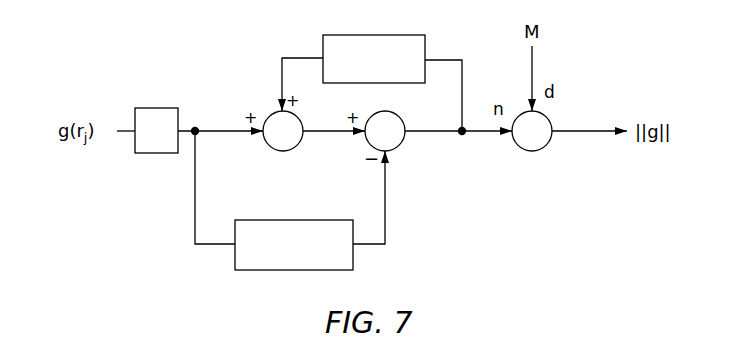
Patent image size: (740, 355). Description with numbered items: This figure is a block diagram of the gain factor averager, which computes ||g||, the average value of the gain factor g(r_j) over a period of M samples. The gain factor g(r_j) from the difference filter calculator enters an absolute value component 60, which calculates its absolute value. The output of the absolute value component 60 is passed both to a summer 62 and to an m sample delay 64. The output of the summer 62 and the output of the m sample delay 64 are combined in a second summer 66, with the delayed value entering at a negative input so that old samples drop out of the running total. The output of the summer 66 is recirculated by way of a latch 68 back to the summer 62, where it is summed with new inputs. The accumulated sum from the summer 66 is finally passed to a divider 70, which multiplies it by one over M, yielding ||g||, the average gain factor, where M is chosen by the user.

The absolute value component 60 is at (160, 108).
The summer 62 is at (297, 146).
The m sample delay 64 is at (353, 262).
The summer 66 is at (398, 146).
The latch 68 is at (425, 50).
The divider 70 is at (547, 147).